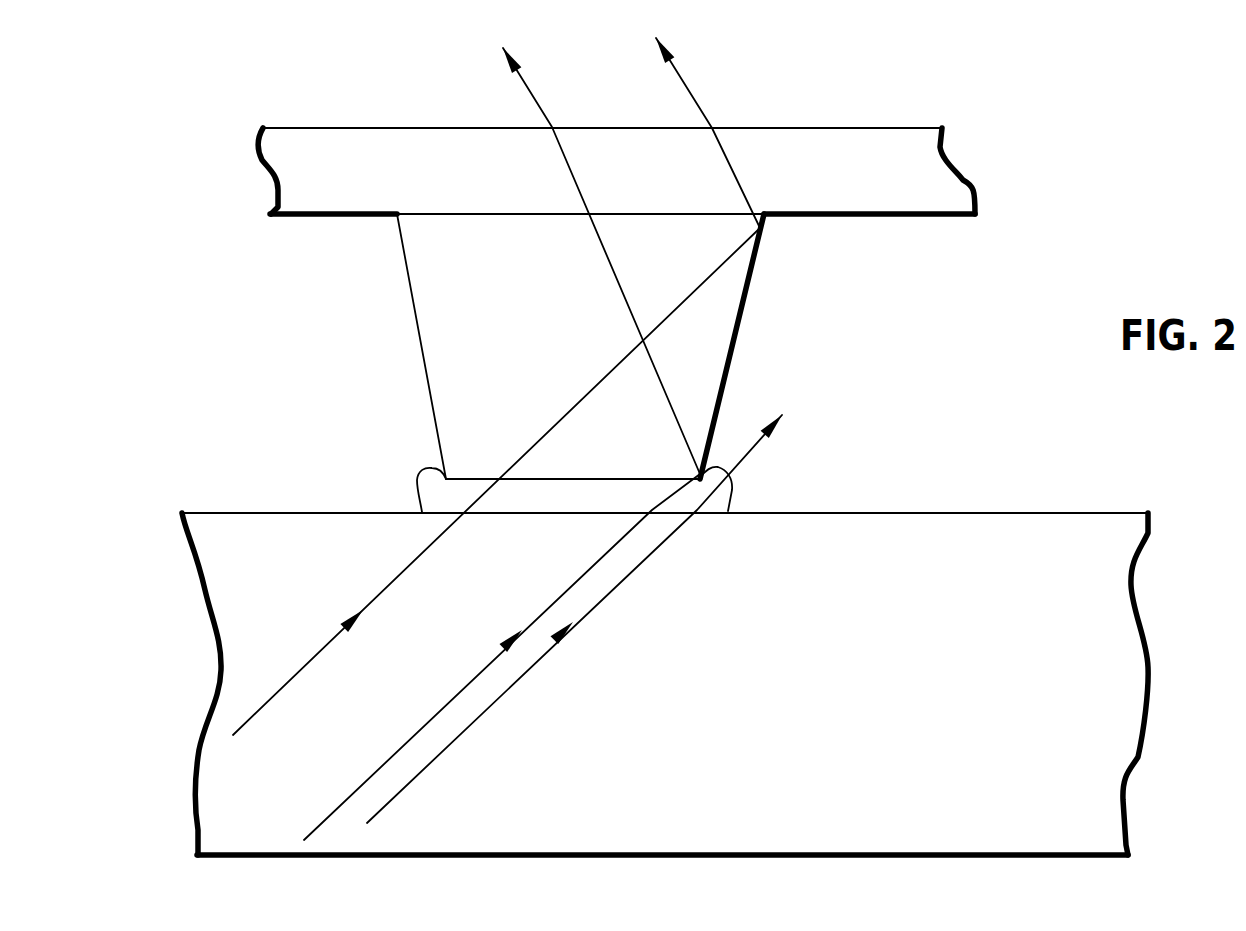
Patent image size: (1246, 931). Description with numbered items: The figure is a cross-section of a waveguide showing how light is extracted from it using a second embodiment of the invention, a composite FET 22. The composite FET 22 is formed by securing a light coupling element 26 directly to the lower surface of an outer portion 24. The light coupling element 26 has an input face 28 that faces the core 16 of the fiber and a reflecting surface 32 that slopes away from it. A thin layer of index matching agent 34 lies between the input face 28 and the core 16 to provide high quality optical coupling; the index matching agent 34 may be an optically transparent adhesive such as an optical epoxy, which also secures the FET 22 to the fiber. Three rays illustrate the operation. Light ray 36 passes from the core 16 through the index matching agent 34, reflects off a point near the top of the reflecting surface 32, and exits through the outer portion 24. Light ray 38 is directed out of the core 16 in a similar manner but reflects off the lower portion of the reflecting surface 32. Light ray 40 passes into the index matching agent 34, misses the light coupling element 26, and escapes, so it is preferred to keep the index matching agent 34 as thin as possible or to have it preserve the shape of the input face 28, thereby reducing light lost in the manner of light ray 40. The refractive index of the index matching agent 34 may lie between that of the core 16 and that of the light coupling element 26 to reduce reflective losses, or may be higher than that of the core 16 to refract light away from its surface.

The core 16 is at (1117, 757).
The composite FET 22 is at (616, 269).
The outer portion 24 is at (911, 137).
The light coupling element 26 is at (599, 346).
The input face 28 is at (480, 478).
The reflecting surface 32 is at (752, 272).
The index matching agent 34 is at (416, 476).
The light ray 36 is at (295, 678).
The light ray 38 is at (397, 753).
The light ray 40 is at (473, 718).